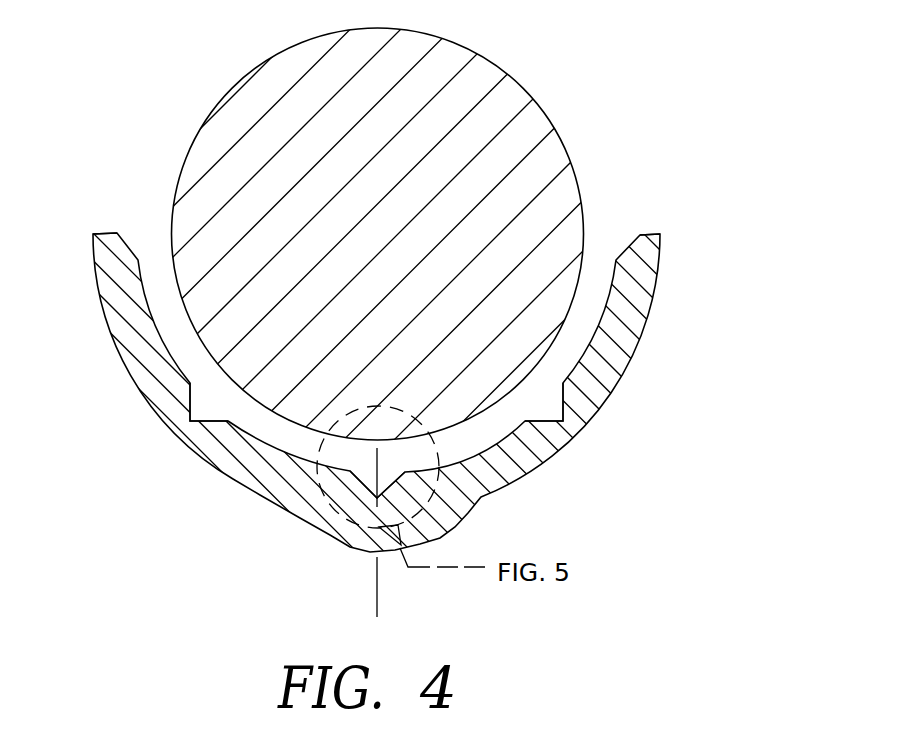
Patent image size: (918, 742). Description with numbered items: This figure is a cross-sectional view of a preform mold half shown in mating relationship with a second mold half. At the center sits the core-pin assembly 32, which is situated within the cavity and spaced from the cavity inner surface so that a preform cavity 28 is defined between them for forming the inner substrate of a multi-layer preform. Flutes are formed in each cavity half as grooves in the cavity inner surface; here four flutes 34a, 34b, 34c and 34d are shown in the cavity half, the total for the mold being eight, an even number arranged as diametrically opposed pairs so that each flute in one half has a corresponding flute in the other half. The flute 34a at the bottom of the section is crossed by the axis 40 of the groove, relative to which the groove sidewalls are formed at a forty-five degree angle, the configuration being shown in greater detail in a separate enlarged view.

The preform cavity 28 is at (180, 333).
The core-pin assembly 32 is at (472, 385).
The flute 34a is at (362, 480).
The flute 34b is at (550, 410).
The flute 34c is at (132, 233).
The flute 34d is at (188, 407).
The axis of the groove 40 is at (373, 580).